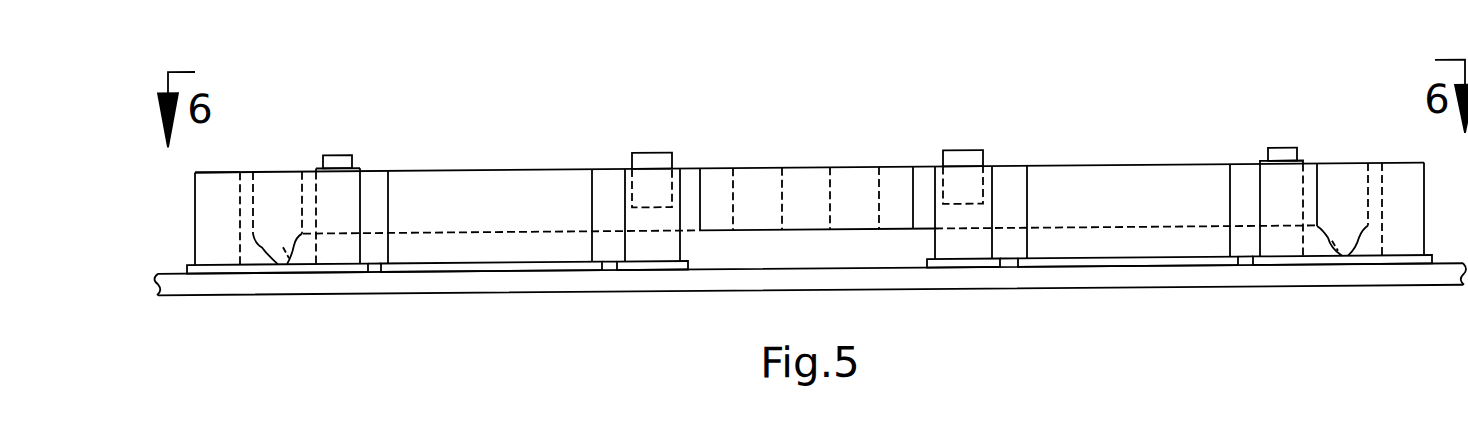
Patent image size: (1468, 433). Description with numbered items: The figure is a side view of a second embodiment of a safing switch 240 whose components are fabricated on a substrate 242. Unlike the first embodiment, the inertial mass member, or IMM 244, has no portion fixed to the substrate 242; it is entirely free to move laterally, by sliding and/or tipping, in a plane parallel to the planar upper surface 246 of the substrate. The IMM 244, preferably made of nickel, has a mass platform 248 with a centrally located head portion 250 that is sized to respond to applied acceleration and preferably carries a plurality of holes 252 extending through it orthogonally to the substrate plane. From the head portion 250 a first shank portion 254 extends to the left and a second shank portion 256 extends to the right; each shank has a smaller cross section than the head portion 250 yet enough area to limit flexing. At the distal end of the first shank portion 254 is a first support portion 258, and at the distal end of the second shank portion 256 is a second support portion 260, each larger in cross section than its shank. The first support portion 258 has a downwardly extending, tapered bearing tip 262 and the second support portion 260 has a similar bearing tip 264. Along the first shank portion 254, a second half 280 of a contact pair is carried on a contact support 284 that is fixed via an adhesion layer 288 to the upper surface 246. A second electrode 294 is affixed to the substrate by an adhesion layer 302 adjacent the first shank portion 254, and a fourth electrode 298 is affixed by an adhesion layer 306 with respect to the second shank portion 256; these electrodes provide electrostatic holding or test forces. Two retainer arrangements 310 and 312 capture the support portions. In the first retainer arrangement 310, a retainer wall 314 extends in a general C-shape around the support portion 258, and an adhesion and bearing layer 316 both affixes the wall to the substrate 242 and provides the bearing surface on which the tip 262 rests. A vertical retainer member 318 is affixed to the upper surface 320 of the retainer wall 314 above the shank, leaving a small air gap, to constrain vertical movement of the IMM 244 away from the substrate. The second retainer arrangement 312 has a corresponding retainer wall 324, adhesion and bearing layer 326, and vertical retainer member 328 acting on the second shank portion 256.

The safing switch 240 is at (448, 71).
The substrate 242 is at (180, 283).
The IMM 244 is at (748, 153).
The planar upper surface 246 is at (773, 268).
The mass platform 248 is at (899, 172).
The head portion 250 is at (853, 226).
The holes 252 is at (850, 180).
The first shank portion 254 is at (607, 175).
The second shank portion 256 is at (1003, 180).
The first support portion 258 is at (280, 181).
The second support portion 260 is at (1342, 181).
The bearing tip 262 is at (292, 275).
The bearing tip 264 is at (1330, 271).
The second half of the second contact pair 280 is at (647, 162).
The contact support 284 is at (667, 255).
The adhesion layer 288 is at (623, 271).
The second electrode 294 is at (455, 253).
The fourth electrode 298 is at (1143, 256).
The adhesion layer 302 is at (525, 269).
The adhesion layer 306 is at (1097, 271).
The first retainer arrangement 310 is at (258, 153).
The second retainer arrangement 312 is at (1362, 155).
The retainer wall 314 is at (225, 233).
The adhesion and bearing layer 316 is at (345, 269).
The vertical retainer member 318 is at (338, 161).
The upper surface 320 is at (198, 171).
The retainer wall 324 is at (1397, 234).
The adhesion and bearing layer 326 is at (1275, 272).
The vertical retainer member 328 is at (1282, 158).